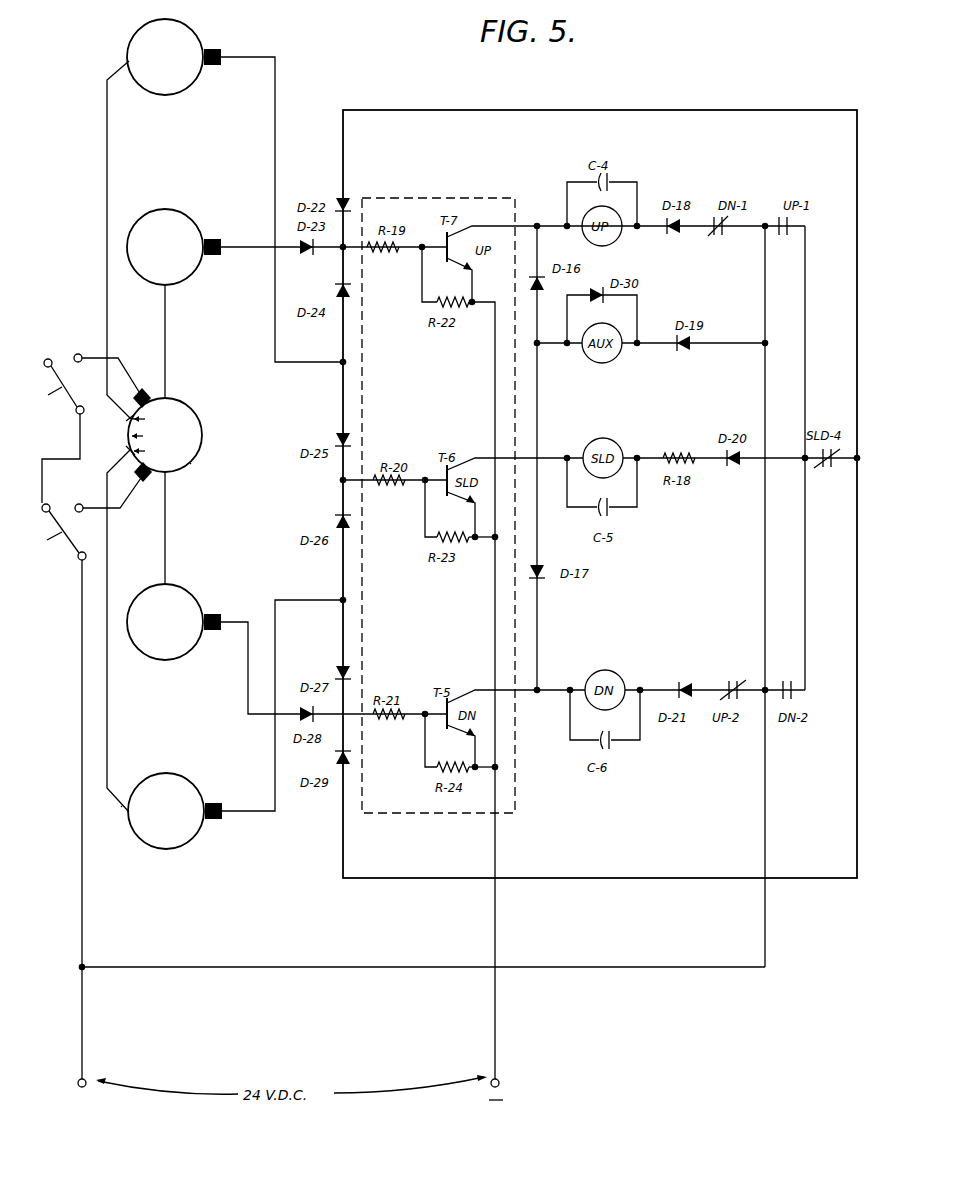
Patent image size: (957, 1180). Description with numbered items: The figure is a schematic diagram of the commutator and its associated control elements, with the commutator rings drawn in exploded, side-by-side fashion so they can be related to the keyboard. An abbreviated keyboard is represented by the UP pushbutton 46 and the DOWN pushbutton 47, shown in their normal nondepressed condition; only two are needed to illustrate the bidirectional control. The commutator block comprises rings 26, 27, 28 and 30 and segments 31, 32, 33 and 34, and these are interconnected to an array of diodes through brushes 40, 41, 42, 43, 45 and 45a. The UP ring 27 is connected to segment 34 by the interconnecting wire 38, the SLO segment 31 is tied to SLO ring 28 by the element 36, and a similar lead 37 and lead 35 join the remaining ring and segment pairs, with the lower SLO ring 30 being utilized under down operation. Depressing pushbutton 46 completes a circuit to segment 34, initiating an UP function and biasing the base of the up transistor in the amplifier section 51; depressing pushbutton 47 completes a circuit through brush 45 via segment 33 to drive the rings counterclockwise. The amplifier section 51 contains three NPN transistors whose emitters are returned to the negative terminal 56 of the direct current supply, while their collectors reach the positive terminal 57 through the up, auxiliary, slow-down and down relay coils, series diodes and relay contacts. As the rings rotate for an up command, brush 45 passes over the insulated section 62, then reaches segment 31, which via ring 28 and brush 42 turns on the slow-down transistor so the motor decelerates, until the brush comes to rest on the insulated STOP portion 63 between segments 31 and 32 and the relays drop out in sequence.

The SLO ring 28 is at (189, 29).
The brush 42 is at (221, 50).
The UP ring 27 is at (185, 219).
The brush 41 is at (221, 243).
The element 36 is at (107, 202).
The brush 45 is at (143, 388).
The interconnecting wire 38 is at (167, 377).
The insulated section 62 is at (130, 411).
The segment 34 is at (196, 419).
The SLO segment 31 is at (128, 420).
The insulated portion 63 is at (127, 446).
The segment 32 is at (129, 449).
The segment 33 is at (190, 463).
The brush 45a is at (143, 483).
The conductor 37 is at (167, 576).
The ring 26 is at (195, 604).
The brush 40 is at (216, 632).
The pushbutton 46 is at (52, 395).
The pushbutton 47 is at (52, 537).
The brush 43 is at (216, 802).
The conductor 35 is at (121, 806).
The SLO ring 30 is at (167, 850).
The amplifier section 51 is at (441, 172).
The negative terminal 56 is at (499, 1085).
The positive terminal 57 is at (78, 1084).